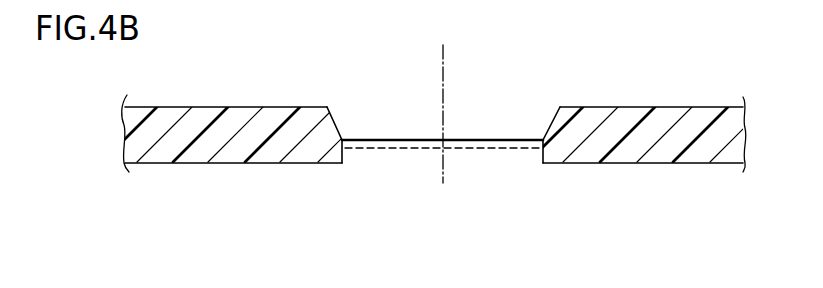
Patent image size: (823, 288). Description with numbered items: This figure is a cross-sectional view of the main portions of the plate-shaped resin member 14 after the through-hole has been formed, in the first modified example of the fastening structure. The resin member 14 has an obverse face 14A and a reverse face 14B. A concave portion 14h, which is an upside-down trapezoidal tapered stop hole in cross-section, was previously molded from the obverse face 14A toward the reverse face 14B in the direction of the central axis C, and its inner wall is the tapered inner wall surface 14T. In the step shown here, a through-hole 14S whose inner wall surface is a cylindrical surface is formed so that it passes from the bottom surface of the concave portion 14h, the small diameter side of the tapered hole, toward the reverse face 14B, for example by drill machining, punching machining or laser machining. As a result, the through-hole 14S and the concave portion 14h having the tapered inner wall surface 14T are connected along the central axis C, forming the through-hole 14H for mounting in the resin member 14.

The resin member 14 is at (600, 108).
The obverse face 14A is at (703, 107).
The reverse face 14B is at (703, 164).
The tapered inner wall surface 14T is at (341, 130).
The through-hole for mounting 14H is at (445, 195).
The concave portion 14h is at (378, 123).
The through-hole 14S is at (343, 157).
The central axis C is at (443, 67).